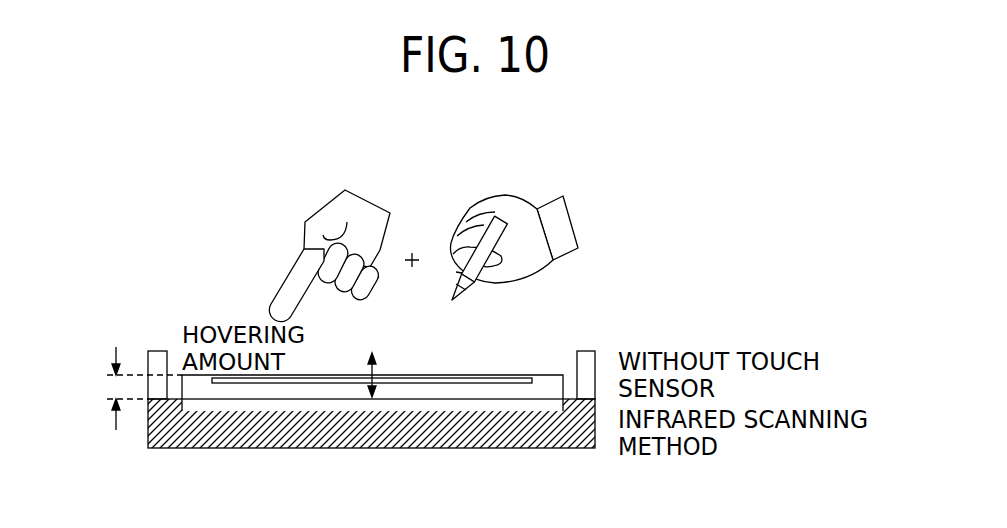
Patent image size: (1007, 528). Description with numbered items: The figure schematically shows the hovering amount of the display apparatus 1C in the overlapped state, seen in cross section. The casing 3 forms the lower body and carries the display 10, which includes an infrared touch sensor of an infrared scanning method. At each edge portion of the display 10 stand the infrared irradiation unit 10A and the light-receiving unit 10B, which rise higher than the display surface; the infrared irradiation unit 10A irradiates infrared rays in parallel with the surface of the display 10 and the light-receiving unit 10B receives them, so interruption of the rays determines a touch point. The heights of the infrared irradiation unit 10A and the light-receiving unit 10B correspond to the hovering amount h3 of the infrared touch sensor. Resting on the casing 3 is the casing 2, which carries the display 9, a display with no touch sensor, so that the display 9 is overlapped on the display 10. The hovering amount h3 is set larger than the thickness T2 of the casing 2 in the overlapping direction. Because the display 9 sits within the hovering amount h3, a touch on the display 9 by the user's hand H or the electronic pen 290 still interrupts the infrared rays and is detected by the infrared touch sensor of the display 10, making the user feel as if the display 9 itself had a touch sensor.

The display apparatus 1C is at (177, 247).
The casing 3 is at (540, 449).
The display 10 is at (490, 400).
The infrared irradiation unit 10A is at (157, 351).
The light-receiving unit 10B is at (592, 351).
The casing 2 is at (549, 375).
The display 9 is at (499, 377).
The user's hand H is at (325, 199).
The electronic pen 290 is at (500, 197).
The thickness of the casing T2 is at (129, 388).
The hovering amount h3 is at (358, 369).